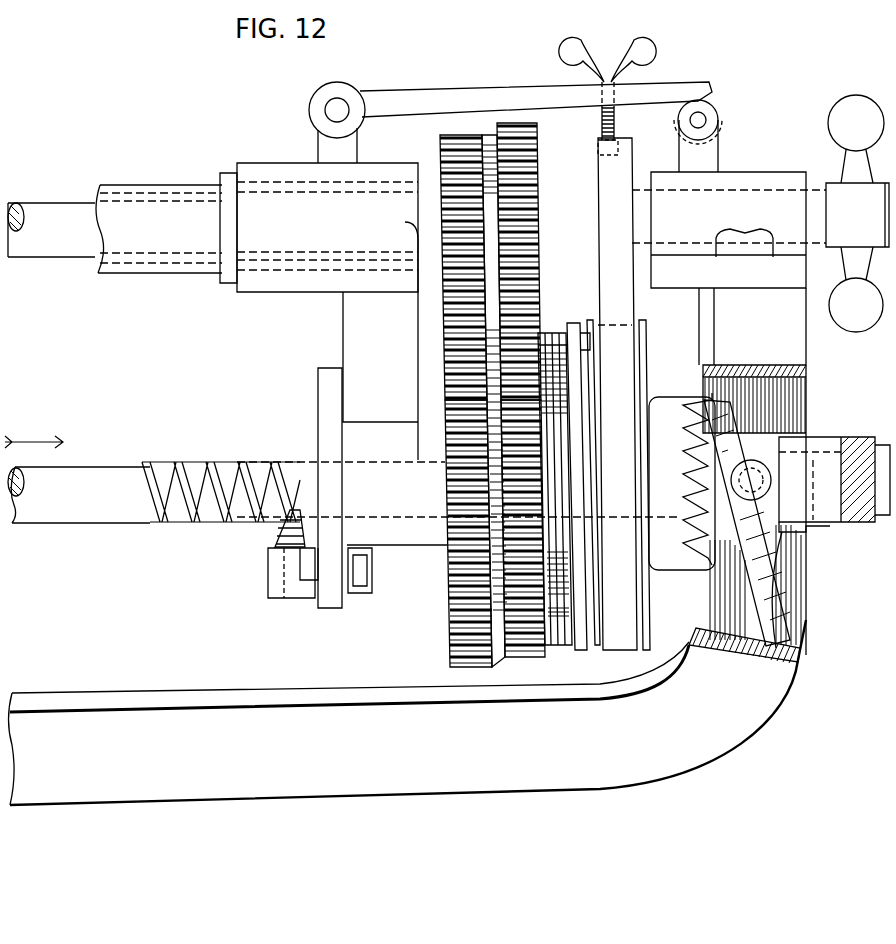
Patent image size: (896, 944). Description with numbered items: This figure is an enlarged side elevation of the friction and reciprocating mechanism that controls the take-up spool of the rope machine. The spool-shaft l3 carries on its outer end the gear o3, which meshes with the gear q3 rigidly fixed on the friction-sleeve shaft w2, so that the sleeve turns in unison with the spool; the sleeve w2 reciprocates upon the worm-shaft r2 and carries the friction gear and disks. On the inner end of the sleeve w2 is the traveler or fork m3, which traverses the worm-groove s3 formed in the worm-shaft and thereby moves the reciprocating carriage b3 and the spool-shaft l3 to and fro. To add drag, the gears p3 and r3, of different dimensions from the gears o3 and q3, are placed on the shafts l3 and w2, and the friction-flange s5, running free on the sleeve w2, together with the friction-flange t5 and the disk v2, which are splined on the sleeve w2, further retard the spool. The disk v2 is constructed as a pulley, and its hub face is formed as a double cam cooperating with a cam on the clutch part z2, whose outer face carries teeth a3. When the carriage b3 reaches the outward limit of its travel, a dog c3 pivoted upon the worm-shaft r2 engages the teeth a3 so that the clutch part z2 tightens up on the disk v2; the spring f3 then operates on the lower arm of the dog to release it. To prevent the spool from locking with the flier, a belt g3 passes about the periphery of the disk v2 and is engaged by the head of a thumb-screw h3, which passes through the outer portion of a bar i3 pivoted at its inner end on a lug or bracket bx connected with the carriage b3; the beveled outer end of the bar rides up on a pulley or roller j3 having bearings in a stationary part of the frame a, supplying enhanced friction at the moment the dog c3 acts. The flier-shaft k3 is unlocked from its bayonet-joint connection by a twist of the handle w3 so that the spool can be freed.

The frame a is at (450, 488).
The flier-shaft k3 is at (448, 220).
The spool-shaft l3 is at (159, 229).
The lug or bracket bx is at (322, 151).
The reciprocating carriage b3 is at (458, 354).
The bar i3 is at (516, 94).
The thumb-screw h3 is at (603, 121).
The gear o3 is at (450, 399).
The gear q3 is at (456, 612).
The gear p3 is at (538, 163).
The gear r3 is at (534, 655).
The friction-flange s5 is at (570, 325).
The friction-flange t5 is at (573, 650).
The belt g3 is at (617, 394).
The disk v2 is at (646, 367).
The pulley or roller j3 is at (712, 113).
The handle w3 is at (845, 171).
The worm-shaft r2 is at (79, 495).
The worm-groove s3 is at (221, 481).
The traveler or fork m3 is at (272, 525).
The friction-sleeve shaft w2 is at (345, 500).
The teeth a3 is at (705, 431).
The clutch part z2 is at (690, 500).
The spring f3 is at (780, 586).
The dog c3 is at (778, 600).